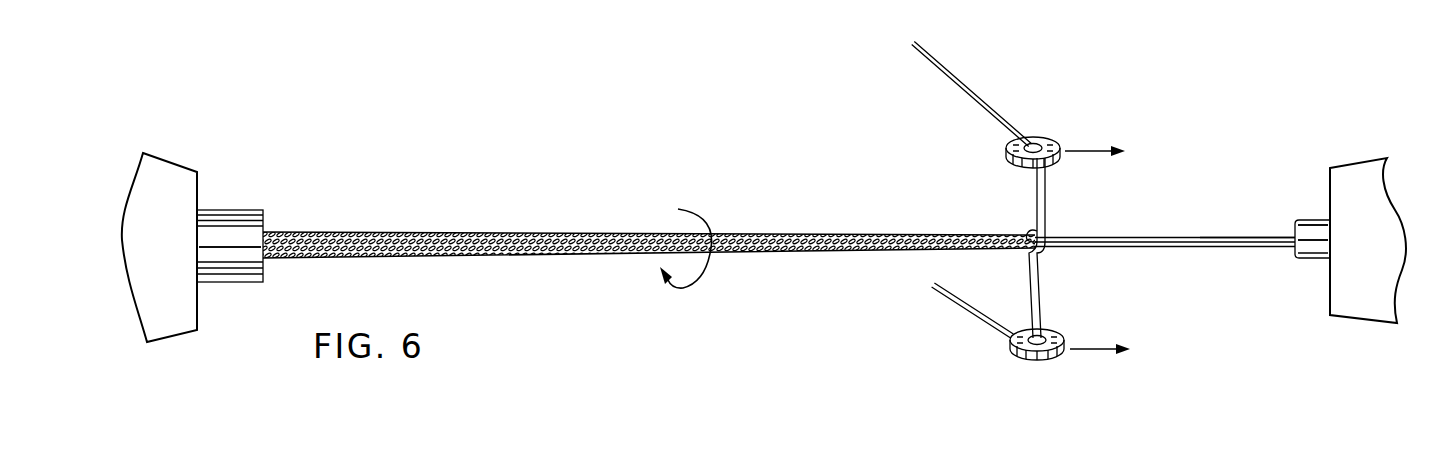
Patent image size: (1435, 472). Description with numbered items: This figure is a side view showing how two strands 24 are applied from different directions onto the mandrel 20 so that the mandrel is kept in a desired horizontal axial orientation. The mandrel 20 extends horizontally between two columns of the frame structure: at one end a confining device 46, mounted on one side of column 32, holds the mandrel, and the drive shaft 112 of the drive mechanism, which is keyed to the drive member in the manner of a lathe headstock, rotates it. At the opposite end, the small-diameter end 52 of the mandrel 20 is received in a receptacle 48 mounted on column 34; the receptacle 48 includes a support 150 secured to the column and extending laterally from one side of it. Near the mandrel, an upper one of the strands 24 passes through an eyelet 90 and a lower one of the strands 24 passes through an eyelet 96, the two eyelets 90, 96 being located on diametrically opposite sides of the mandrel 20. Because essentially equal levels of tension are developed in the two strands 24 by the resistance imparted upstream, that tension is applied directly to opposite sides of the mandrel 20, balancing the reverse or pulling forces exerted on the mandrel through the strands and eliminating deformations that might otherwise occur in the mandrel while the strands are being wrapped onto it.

The mandrel 20 is at (1181, 232).
The strands 24 is at (510, 235).
The column 32 is at (167, 165).
The column 34 is at (1363, 312).
The confining device 46 is at (219, 205).
The receptacle 48 is at (1314, 264).
The small-diameter end 52 is at (1267, 238).
The eyelet 90 is at (1035, 132).
The eyelet 96 is at (1028, 367).
The drive shaft 112 is at (235, 258).
The support 150 is at (1313, 233).